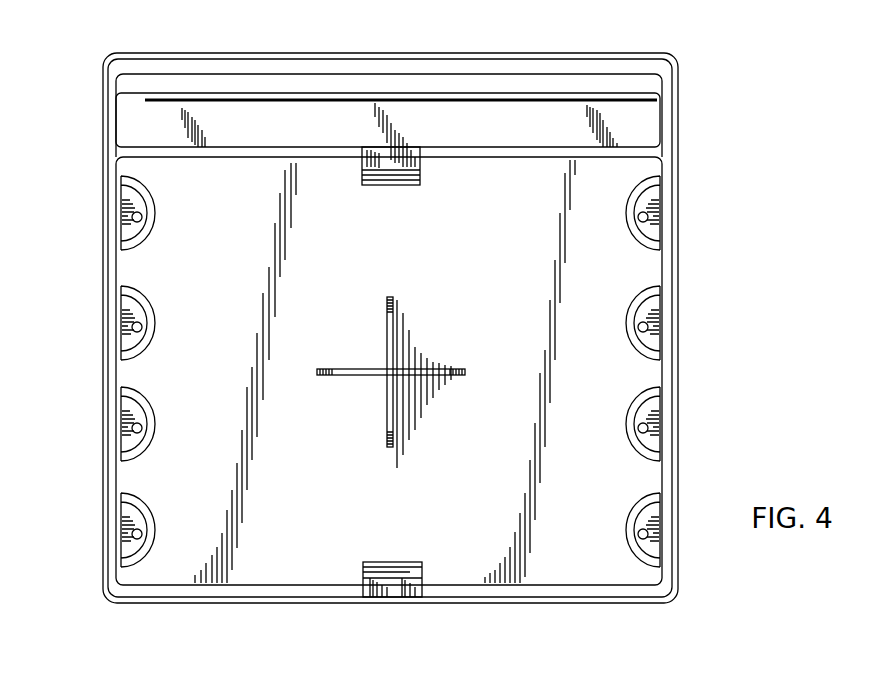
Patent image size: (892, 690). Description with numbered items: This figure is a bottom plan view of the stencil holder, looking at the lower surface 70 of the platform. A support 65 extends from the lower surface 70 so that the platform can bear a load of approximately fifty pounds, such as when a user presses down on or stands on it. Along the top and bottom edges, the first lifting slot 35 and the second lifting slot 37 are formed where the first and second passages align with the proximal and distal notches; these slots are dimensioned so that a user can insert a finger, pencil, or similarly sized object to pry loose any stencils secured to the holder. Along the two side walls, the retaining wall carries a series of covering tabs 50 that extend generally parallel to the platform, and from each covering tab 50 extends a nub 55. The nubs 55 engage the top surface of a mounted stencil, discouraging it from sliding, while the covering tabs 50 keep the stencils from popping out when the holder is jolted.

The first lifting slot 35 is at (390, 587).
The second lifting slot 37 is at (387, 160).
The covering tab 50 is at (126, 203).
The nub 55 is at (133, 220).
The support 65 is at (350, 378).
The lower surface 70 is at (308, 570).